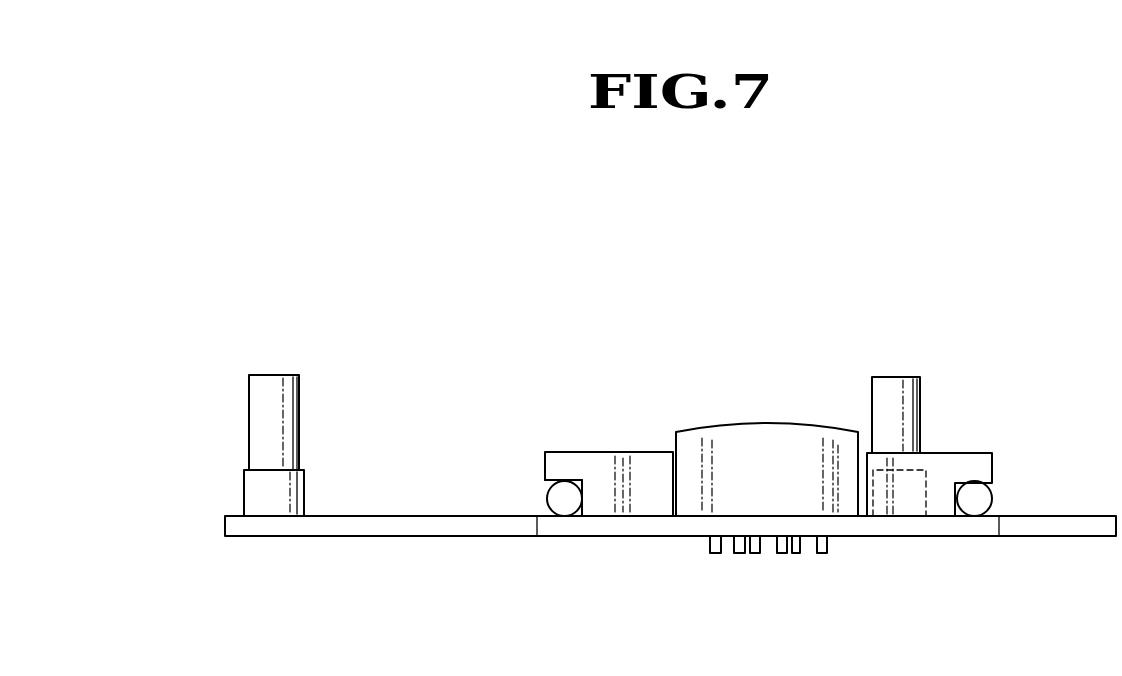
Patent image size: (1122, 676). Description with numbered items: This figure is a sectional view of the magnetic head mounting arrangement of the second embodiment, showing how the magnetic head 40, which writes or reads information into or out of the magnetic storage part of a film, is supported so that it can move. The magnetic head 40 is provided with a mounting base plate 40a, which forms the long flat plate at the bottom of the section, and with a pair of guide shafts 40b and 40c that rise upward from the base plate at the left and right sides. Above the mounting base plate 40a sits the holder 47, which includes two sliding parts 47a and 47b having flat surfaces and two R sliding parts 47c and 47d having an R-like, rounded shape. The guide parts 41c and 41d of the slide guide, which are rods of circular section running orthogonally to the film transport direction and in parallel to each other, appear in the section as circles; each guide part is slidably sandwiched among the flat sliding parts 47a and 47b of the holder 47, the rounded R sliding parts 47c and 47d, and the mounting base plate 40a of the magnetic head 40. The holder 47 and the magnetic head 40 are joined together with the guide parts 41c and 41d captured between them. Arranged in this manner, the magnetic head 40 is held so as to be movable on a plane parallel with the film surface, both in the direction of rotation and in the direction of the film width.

The magnetic head 40 is at (732, 462).
The mounting base plate 40a is at (687, 525).
The guide shaft 40b is at (263, 390).
The guide shaft 40c is at (887, 387).
The guide part 41c is at (548, 503).
The guide part 41d is at (982, 503).
The holder 47 is at (642, 470).
The sliding part 47a is at (563, 480).
The sliding part 47b is at (978, 483).
The R sliding part 47c is at (588, 497).
The R sliding part 47d is at (948, 505).